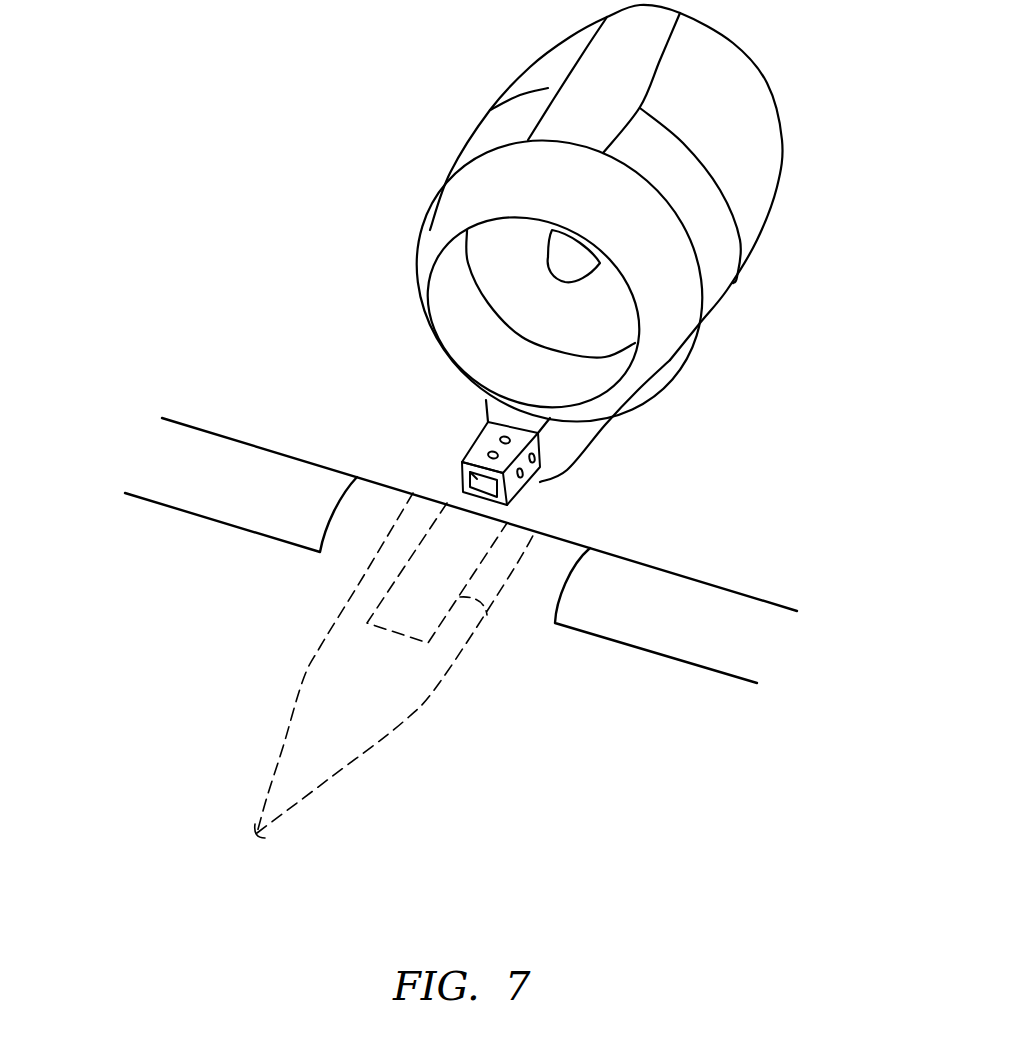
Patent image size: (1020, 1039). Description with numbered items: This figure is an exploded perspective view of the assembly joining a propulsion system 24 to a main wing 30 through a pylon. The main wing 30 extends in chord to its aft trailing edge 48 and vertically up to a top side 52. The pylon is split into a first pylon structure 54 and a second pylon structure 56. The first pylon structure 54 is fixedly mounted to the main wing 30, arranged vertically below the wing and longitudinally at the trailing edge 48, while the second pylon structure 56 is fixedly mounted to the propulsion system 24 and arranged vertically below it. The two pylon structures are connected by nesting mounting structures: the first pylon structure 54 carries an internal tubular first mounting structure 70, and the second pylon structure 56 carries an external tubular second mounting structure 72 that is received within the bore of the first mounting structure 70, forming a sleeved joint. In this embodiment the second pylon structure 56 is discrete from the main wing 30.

The propulsion system 24 is at (773, 183).
The main wing 30 is at (141, 463).
The trailing edge 48 is at (205, 431).
The top side 52 is at (142, 583).
The first pylon structure 54 is at (403, 720).
The second pylon structure 56 is at (597, 435).
The first mounting structure 70 is at (487, 615).
The second mounting structure 72 is at (512, 500).